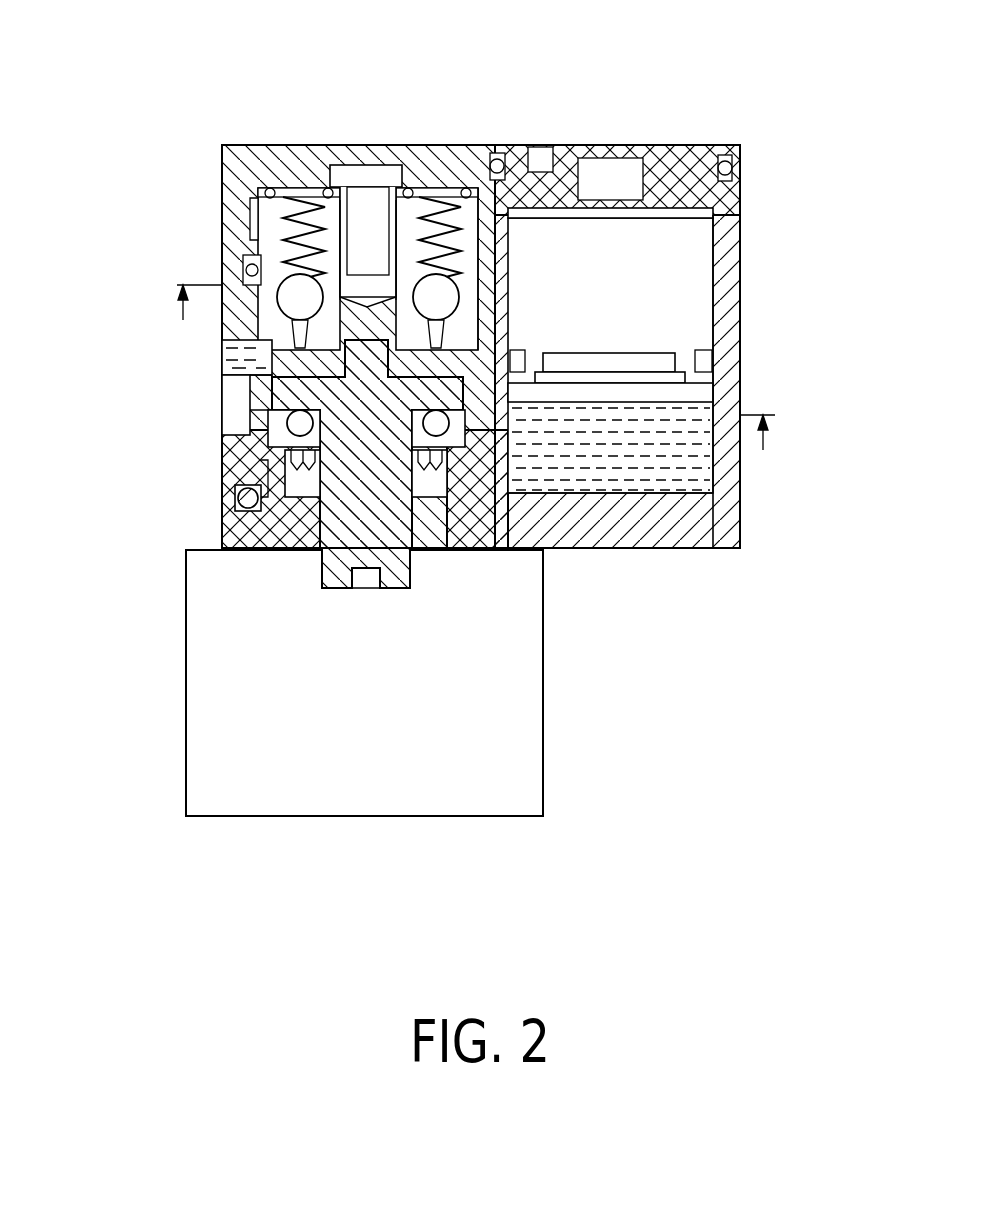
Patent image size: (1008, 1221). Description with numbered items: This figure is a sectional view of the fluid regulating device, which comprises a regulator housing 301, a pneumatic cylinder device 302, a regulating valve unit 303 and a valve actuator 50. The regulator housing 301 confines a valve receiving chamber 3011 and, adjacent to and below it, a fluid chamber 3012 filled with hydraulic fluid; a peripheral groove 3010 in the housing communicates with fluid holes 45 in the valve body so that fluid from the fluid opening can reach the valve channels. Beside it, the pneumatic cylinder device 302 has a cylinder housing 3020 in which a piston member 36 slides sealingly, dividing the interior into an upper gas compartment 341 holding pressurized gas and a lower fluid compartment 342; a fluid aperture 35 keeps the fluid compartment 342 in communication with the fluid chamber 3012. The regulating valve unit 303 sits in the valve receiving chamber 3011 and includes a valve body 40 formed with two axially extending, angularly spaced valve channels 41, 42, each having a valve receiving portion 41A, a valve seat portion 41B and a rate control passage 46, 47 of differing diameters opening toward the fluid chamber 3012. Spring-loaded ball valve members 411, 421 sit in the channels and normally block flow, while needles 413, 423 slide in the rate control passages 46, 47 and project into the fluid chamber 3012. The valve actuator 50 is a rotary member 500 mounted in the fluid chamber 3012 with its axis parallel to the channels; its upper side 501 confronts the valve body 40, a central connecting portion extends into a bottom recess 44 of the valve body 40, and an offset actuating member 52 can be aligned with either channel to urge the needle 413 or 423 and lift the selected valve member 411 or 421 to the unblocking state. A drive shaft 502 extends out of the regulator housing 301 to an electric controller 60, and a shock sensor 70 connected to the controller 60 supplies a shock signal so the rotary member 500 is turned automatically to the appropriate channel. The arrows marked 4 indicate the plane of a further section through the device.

The regulator housing 301 is at (268, 147).
The pneumatic cylinder device 302 is at (745, 158).
The regulating valve unit 303 is at (468, 183).
The peripheral groove 3010 is at (252, 147).
The valve receiving chamber 3011 is at (258, 215).
The fluid chamber 3012 is at (262, 415).
The cylinder housing 3020 is at (745, 500).
The fluid aperture 35 is at (490, 370).
The piston member 36 is at (672, 350).
The gas compartment 341 is at (695, 240).
The fluid compartment 342 is at (680, 450).
The valve body 40 is at (240, 303).
The valve channel 41 is at (277, 260).
The valve receiving portion 41A is at (347, 205).
The valve seat portion 41B is at (352, 297).
The valve member 411 is at (262, 290).
The needle 413 is at (262, 393).
The valve channel 42 is at (367, 297).
The valve member 421 is at (473, 330).
The needle 423 is at (500, 420).
The bottom recess 44 is at (260, 357).
The fluid holes 45 is at (262, 200).
The rate control passage 46 is at (258, 345).
The rate control passage 47 is at (478, 335).
The valve actuator 50 is at (320, 522).
The rotary member 500 is at (322, 570).
The upper side 501 is at (262, 467).
The drive shaft 502 is at (430, 490).
The actuating member 52 is at (425, 435).
The electric controller 60 is at (186, 612).
The shock sensor 70 is at (545, 737).
The section line 4 is at (476, 369).